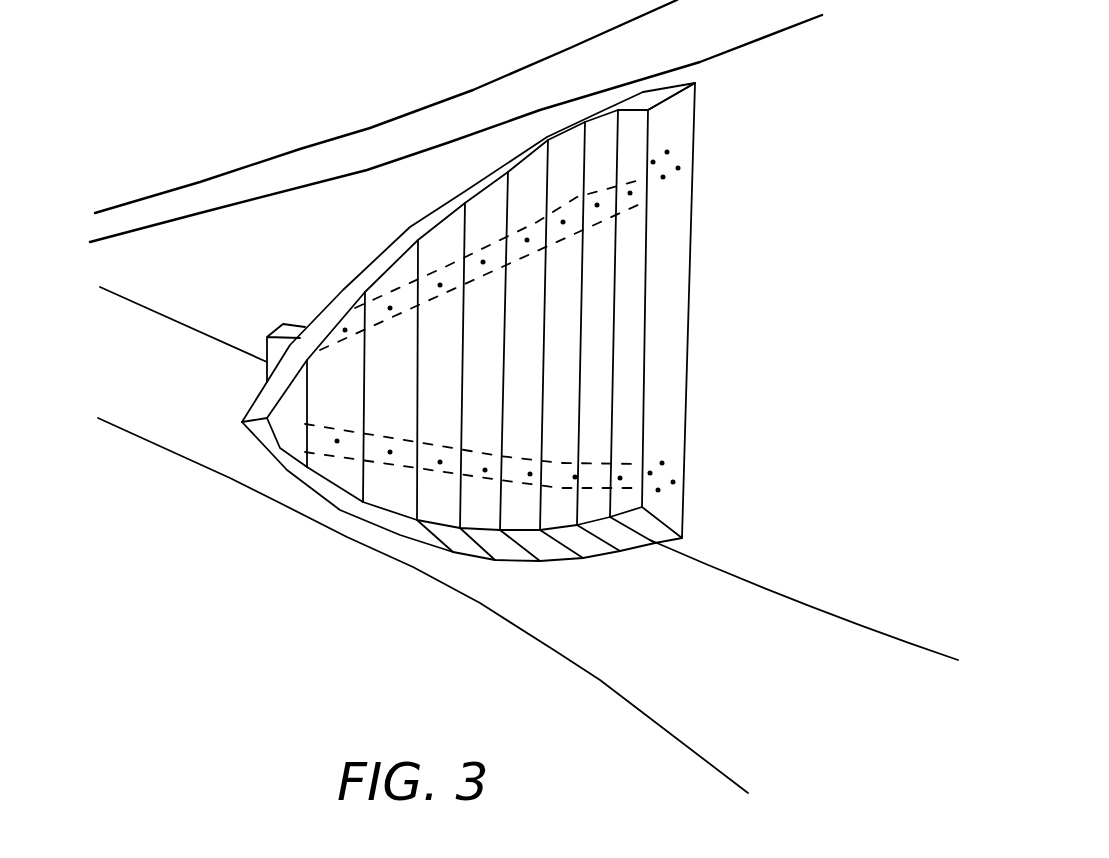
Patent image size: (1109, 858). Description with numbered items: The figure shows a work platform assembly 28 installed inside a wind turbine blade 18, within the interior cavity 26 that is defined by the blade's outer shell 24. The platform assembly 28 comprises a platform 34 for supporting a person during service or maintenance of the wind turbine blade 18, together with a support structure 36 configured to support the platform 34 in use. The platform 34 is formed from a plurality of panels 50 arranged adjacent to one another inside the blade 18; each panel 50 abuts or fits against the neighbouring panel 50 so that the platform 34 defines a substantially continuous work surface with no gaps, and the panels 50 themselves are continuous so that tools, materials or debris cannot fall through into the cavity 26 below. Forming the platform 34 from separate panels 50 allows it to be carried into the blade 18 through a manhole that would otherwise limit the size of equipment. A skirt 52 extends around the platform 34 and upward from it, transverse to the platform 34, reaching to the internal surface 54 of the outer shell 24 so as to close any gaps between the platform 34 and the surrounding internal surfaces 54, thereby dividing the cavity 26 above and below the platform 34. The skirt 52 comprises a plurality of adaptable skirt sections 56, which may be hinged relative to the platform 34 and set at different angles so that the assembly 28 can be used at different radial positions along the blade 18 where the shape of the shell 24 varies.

The wind turbine blade 18 is at (348, 107).
The outer shell 24 is at (565, 652).
The interior cavity 26 is at (182, 388).
The work platform assembly 28 is at (740, 102).
The platform 34 is at (603, 347).
The support structure 36 is at (260, 326).
The panels 50 is at (388, 350).
The skirt 52 is at (570, 578).
The internal surface 54 is at (500, 590).
The adaptable skirt sections 56 is at (412, 228).